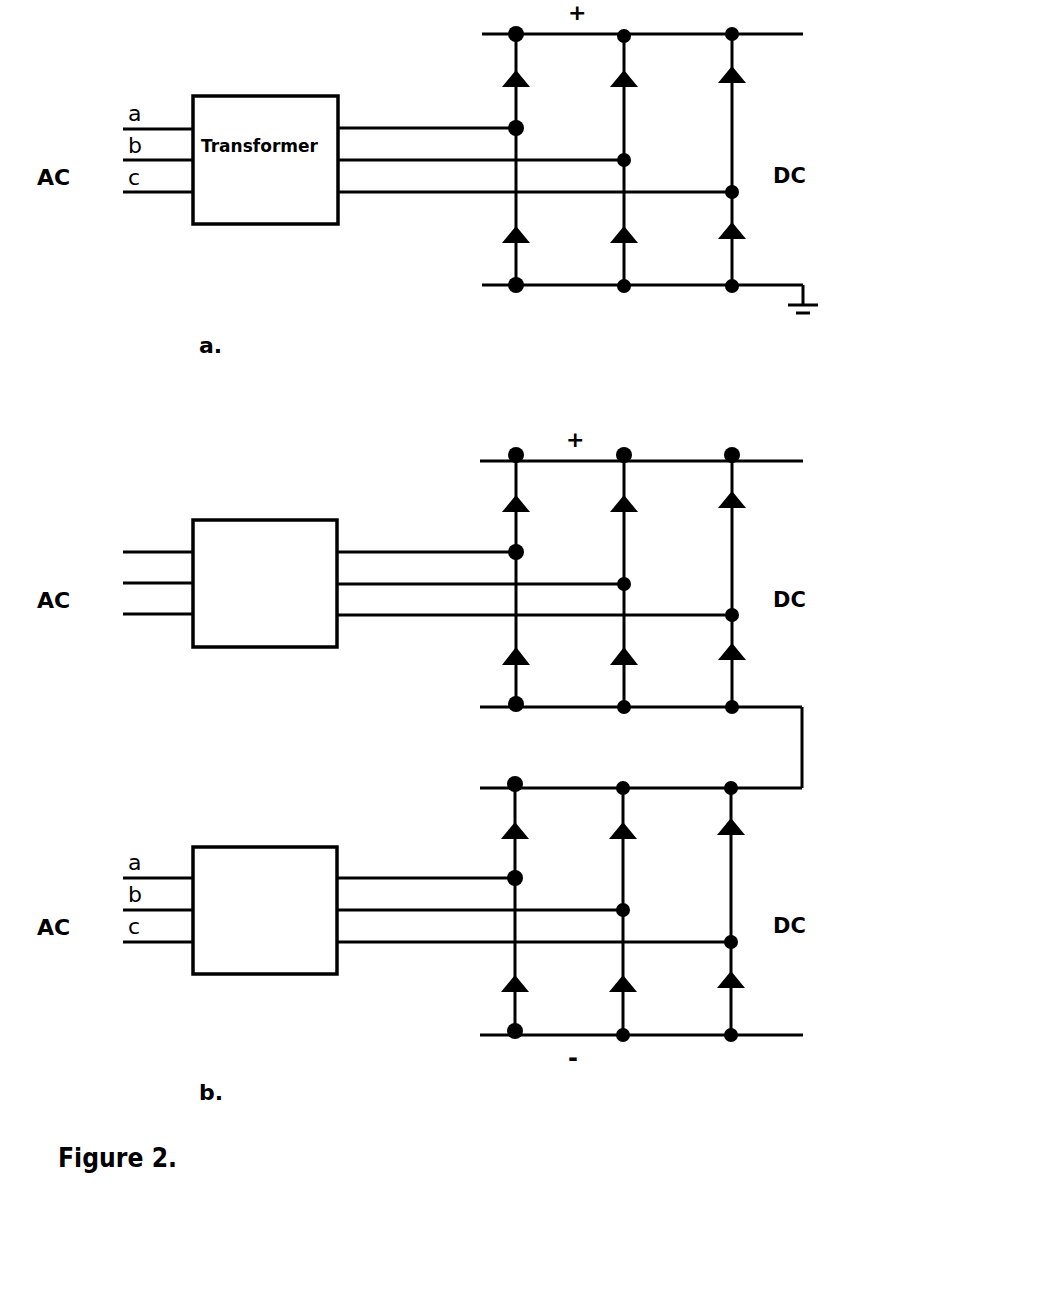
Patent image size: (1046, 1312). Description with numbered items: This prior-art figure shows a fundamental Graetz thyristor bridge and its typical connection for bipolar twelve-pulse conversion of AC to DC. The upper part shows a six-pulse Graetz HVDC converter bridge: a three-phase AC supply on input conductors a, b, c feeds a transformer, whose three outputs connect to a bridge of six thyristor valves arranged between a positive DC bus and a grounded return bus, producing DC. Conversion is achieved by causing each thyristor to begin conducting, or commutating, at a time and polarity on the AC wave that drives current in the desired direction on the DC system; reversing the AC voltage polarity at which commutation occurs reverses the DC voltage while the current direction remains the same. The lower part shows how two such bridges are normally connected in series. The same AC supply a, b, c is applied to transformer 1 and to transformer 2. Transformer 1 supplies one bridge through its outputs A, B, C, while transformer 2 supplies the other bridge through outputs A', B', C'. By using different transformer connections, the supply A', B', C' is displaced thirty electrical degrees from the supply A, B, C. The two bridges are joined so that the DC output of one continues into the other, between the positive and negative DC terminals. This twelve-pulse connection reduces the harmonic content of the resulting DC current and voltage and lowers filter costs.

The transformer 1 is at (265, 583).
The transformer 2 is at (265, 910).
The AC input phase a is at (158, 538).
The AC input phase b is at (158, 569).
The AC input phase c is at (158, 600).
The three-phase AC supply phase A is at (426, 539).
The three-phase AC supply phase B is at (480, 571).
The three-phase AC supply phase C is at (534, 602).
The displaced three-phase AC supply phase A' is at (426, 864).
The displaced three-phase AC supply phase B' is at (480, 896).
The displaced three-phase AC supply phase C' is at (534, 928).